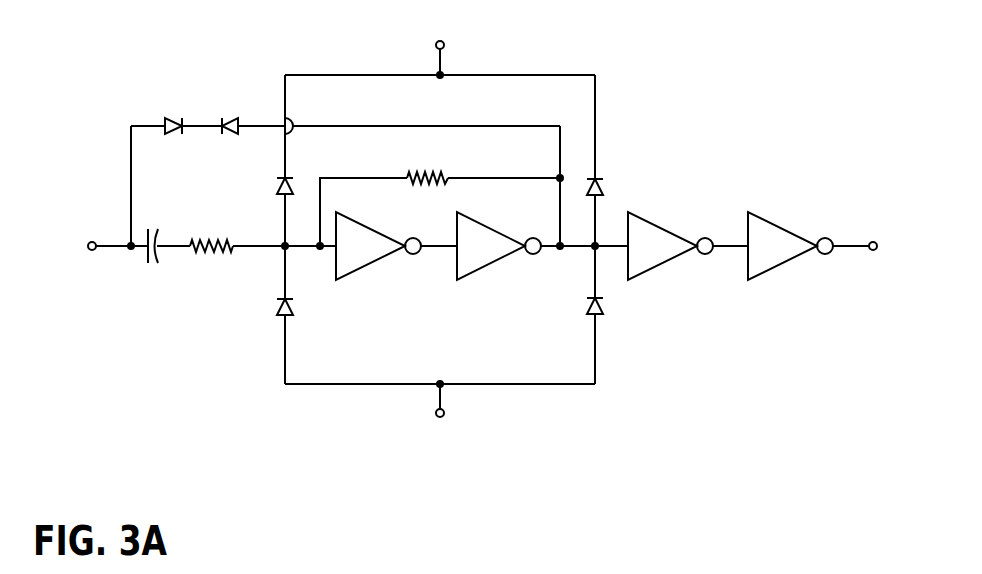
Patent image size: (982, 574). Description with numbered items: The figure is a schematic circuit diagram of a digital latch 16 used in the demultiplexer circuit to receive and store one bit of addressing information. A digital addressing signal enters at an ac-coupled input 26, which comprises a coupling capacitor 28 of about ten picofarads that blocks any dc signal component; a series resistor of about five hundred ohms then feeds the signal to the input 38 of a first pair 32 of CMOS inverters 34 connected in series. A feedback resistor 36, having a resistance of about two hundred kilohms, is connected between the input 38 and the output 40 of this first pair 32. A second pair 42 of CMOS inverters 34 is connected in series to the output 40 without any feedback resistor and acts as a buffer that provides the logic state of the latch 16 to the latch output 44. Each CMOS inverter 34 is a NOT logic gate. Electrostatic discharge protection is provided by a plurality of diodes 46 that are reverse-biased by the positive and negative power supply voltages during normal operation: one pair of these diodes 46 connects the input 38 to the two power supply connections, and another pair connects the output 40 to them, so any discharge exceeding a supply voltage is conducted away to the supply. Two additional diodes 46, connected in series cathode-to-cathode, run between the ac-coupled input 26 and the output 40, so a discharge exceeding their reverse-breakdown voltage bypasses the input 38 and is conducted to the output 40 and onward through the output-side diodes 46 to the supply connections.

The latch 16 is at (620, 441).
The ac-coupled input 26 is at (89, 243).
The coupling capacitor 28 is at (158, 240).
The first pair of CMOS inverters 32 is at (553, 278).
The CMOS inverter 34 is at (387, 255).
The feedback resistor 36 is at (410, 176).
The input 38 is at (309, 243).
The output 40 is at (571, 243).
The second pair of CMOS inverters 42 is at (620, 278).
The latch output 44 is at (870, 243).
The diode 46 is at (175, 137).